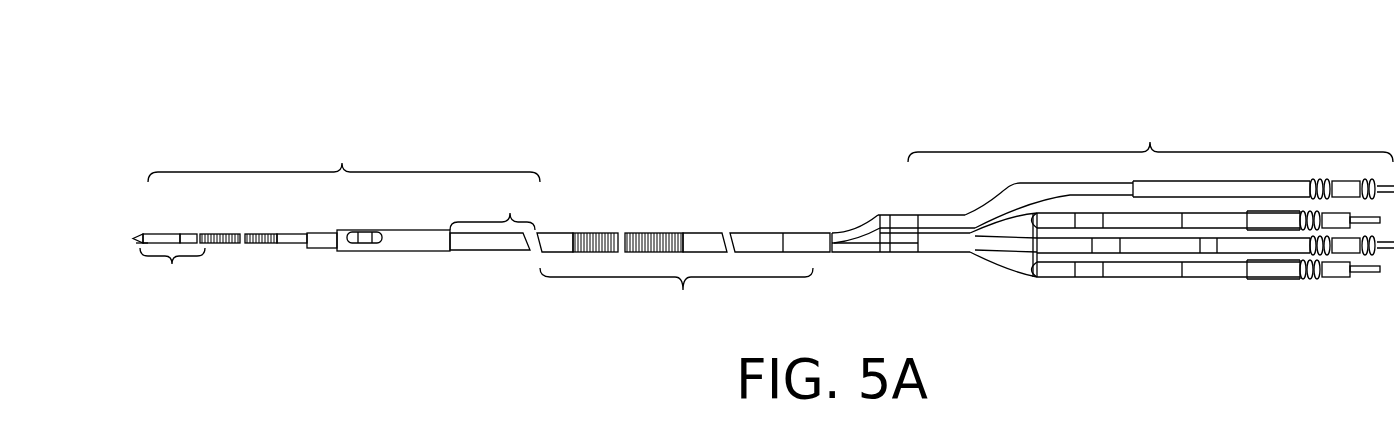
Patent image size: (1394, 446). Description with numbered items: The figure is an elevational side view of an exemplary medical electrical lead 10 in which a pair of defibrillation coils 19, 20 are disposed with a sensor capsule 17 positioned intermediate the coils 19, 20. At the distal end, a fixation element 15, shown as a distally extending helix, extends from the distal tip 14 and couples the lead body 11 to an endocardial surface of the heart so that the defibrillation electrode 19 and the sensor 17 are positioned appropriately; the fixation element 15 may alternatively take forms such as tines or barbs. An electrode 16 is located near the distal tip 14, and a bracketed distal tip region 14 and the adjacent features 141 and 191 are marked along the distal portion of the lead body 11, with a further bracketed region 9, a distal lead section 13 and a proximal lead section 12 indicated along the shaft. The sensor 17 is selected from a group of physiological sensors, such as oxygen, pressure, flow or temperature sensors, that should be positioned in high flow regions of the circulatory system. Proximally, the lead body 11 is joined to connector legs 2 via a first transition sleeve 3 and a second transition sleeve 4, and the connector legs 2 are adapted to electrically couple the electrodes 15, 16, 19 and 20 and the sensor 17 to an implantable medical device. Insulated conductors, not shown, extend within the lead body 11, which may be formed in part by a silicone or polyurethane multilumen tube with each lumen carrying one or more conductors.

The connector legs 2 is at (1151, 193).
The first transition sleeve 3 is at (880, 240).
The second transition sleeve 4 is at (1017, 256).
The transition section 9 is at (492, 205).
The medical electrical lead 10 is at (772, 112).
The lead body 11 is at (295, 250).
The proximal shaft section 12 is at (675, 283).
The distal shaft section 13 is at (344, 155).
The distal tip 14 is at (172, 274).
The fixation element 15 is at (134, 237).
The electrode 16 is at (142, 233).
The sensor capsule 17 is at (385, 242).
The defibrillation coil 19 is at (237, 245).
The defibrillation coil 20 is at (600, 233).
The tip opening 141 is at (140, 244).
The distal coil electrode 191 is at (200, 246).